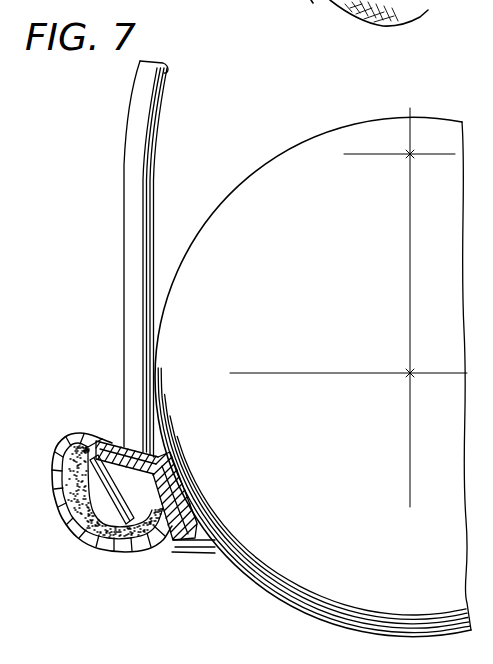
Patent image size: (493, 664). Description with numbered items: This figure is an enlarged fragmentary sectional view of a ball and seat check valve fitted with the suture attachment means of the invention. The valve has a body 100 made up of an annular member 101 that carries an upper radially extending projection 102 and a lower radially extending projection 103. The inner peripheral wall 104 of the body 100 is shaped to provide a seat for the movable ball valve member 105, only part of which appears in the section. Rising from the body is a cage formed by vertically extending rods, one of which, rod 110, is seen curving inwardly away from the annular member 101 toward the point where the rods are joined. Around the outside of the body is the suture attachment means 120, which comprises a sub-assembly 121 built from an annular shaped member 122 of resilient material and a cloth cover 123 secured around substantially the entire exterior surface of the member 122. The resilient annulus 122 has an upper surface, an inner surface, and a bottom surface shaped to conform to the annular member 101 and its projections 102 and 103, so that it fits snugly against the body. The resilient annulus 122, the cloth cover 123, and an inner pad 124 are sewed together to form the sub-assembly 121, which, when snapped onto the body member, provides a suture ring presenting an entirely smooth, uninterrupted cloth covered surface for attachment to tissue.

The body 100 is at (178, 468).
The annular member 101 is at (143, 452).
The upper radially extending projection 102 is at (108, 447).
The lower radially extending projection 103 is at (173, 542).
The inner peripheral wall 104 is at (163, 497).
The ball valve member 105 is at (303, 143).
The rod 110 is at (130, 175).
The suture attachment means 120 is at (102, 553).
The sub-assembly 121 is at (95, 440).
The annular shaped member 122 is at (128, 530).
The cloth cover 123 is at (108, 540).
The inner pad 124 is at (83, 497).